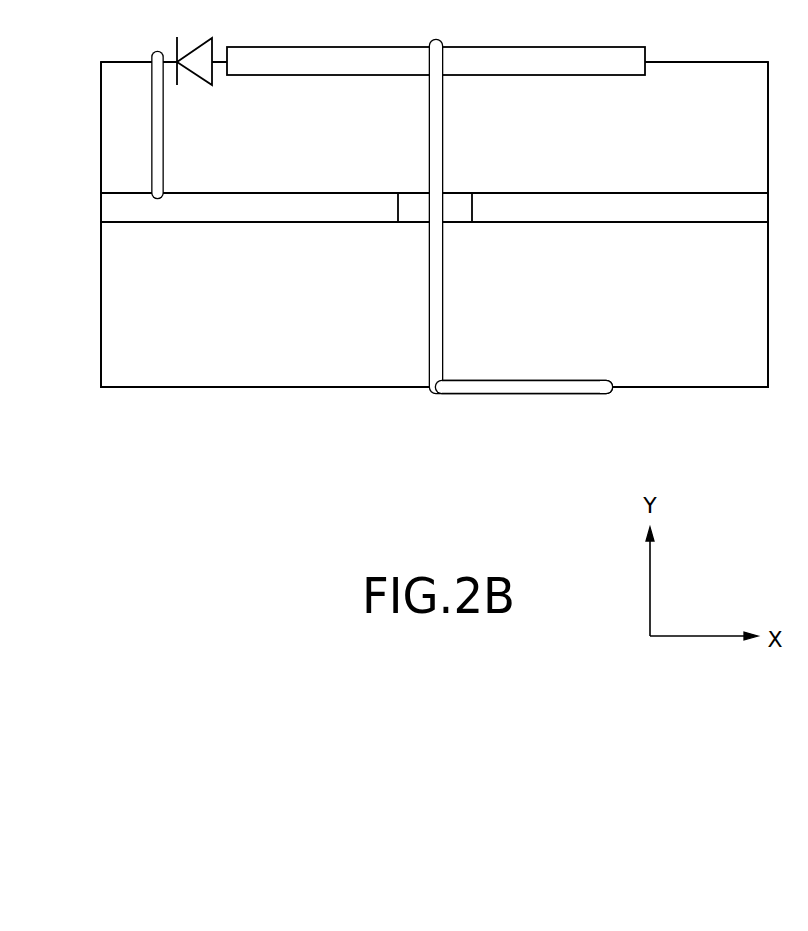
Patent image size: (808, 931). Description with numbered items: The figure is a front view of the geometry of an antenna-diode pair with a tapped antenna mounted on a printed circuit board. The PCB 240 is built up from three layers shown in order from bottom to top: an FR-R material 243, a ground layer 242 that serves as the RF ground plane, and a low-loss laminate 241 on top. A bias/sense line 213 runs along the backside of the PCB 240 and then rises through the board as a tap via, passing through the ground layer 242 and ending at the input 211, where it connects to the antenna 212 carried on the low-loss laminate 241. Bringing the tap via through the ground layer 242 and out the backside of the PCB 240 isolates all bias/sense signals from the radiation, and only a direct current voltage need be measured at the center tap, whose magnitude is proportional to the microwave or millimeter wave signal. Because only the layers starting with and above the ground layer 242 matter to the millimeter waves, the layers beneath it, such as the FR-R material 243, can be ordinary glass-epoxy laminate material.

The input 211 is at (512, 194).
The antenna 212 is at (497, 41).
The bias/sense line 213 is at (588, 389).
The PCB 240 is at (251, 413).
The low-loss laminate 241 is at (434, 127).
The ground layer 242 is at (645, 220).
The FR-R material 243 is at (434, 304).